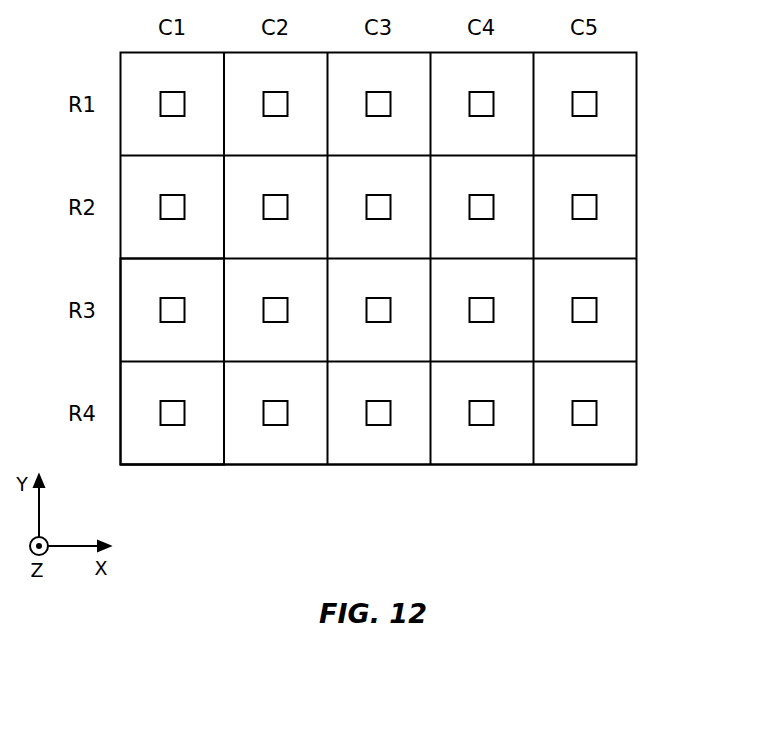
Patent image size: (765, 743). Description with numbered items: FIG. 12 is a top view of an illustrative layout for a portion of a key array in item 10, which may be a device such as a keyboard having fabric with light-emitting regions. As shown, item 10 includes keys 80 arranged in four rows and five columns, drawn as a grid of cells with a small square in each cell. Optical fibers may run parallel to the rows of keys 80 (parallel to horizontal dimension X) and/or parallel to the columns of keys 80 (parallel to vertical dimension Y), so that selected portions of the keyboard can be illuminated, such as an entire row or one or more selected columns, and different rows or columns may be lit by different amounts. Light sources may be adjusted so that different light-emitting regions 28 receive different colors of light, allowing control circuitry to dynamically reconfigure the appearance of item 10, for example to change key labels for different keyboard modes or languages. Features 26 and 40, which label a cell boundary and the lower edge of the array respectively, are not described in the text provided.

The item 10 is at (675, 46).
The key wall 26 is at (420, 450).
The light-emitting region 28 is at (274, 425).
The substrate 40 is at (500, 466).
The key 80 is at (182, 343).